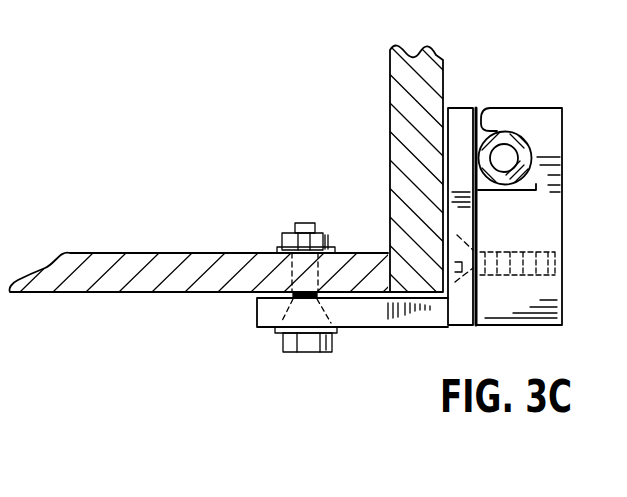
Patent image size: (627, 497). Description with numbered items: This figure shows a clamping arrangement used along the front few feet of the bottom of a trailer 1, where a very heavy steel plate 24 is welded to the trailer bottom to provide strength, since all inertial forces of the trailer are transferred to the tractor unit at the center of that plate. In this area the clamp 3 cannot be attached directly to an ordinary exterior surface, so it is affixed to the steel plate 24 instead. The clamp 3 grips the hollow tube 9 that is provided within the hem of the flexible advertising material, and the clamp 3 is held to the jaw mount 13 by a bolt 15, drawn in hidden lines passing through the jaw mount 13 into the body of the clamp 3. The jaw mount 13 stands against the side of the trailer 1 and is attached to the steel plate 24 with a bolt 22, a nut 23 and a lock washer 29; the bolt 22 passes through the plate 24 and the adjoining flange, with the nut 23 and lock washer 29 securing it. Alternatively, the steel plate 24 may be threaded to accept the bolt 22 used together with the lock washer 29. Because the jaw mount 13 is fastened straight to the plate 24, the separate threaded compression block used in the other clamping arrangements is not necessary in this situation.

The trailer 1 is at (408, 63).
The clamp 3 is at (562, 197).
The hollow tube 9 is at (537, 157).
The jaw mount 13 is at (466, 118).
The bolt 15 is at (548, 264).
The bolt 22 is at (322, 352).
The nut 23 is at (330, 240).
The steel plate 24 is at (188, 293).
The lock washer 29 is at (279, 247).